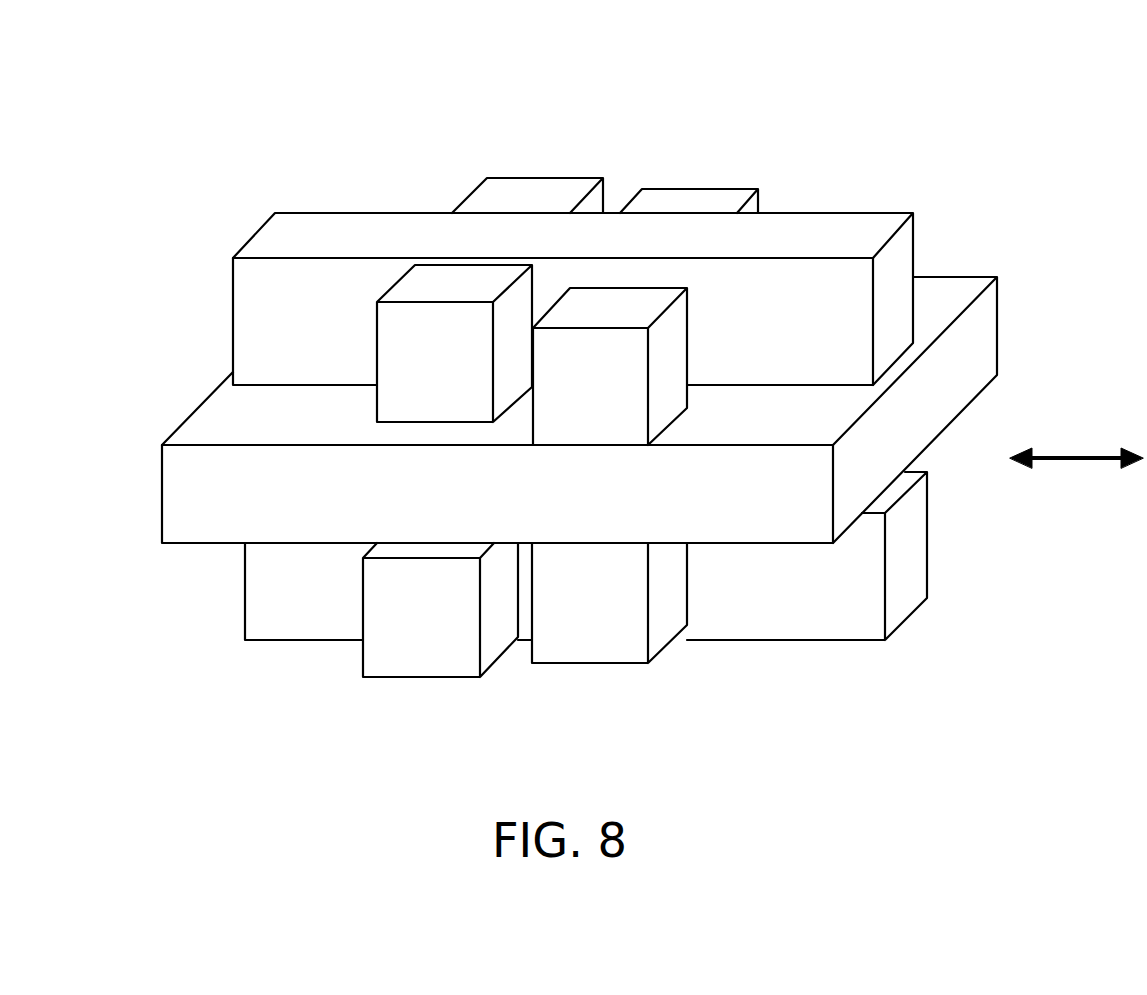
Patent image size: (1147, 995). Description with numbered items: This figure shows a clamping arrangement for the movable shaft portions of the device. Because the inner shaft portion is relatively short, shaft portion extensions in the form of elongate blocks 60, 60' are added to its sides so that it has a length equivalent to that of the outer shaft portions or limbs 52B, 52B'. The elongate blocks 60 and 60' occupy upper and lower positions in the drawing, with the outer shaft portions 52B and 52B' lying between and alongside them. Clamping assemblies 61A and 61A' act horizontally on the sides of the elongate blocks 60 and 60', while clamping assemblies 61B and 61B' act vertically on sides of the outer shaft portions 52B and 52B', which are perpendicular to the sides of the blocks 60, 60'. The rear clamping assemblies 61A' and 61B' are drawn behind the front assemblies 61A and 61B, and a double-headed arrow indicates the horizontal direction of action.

The elongate block 60 is at (674, 256).
The elongate block 60' is at (679, 556).
The clamping assembly 61A is at (378, 367).
The clamping assembly 61A' is at (480, 135).
The clamping assembly 61B is at (781, 360).
The clamping assembly 61B' is at (740, 135).
The outer shaft portion 52B is at (643, 379).
The outer shaft portion 52B' is at (643, 585).